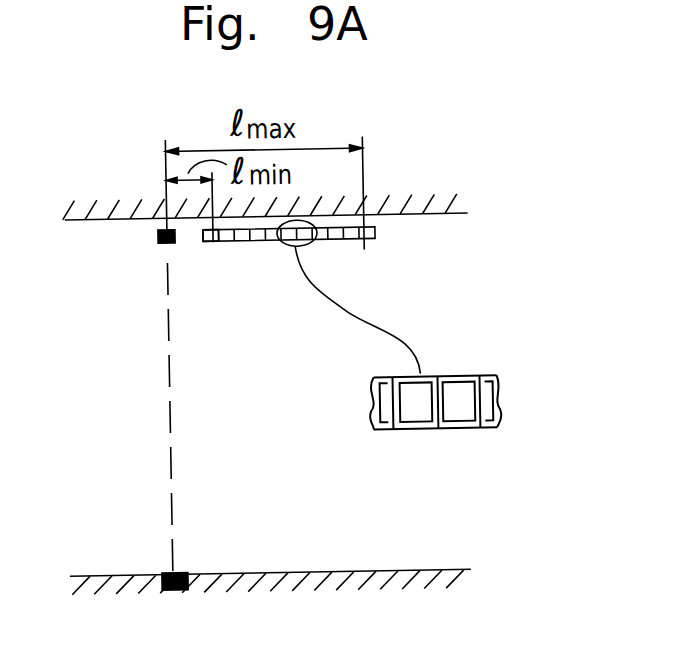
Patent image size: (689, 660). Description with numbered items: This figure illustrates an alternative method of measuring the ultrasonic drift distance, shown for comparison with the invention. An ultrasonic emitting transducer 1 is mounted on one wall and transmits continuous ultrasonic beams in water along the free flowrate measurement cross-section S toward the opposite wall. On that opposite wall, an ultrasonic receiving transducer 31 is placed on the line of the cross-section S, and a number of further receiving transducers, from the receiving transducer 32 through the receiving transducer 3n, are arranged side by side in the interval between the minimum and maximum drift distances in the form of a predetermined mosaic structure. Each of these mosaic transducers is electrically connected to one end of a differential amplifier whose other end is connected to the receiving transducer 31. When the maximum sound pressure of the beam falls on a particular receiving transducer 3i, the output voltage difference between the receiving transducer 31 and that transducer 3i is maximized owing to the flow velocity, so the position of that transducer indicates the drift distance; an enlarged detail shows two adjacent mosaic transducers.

The ultrasonic emitting transducer 1 is at (169, 592).
The free flowrate measurement cross-section S is at (170, 422).
The ultrasonic receiving transducer 31 is at (158, 242).
The ultrasonic receiving transducer 32 is at (208, 244).
The ultrasonic receiving transducer 3n is at (365, 243).
The ultrasonic receiving transducer 3i is at (405, 419).